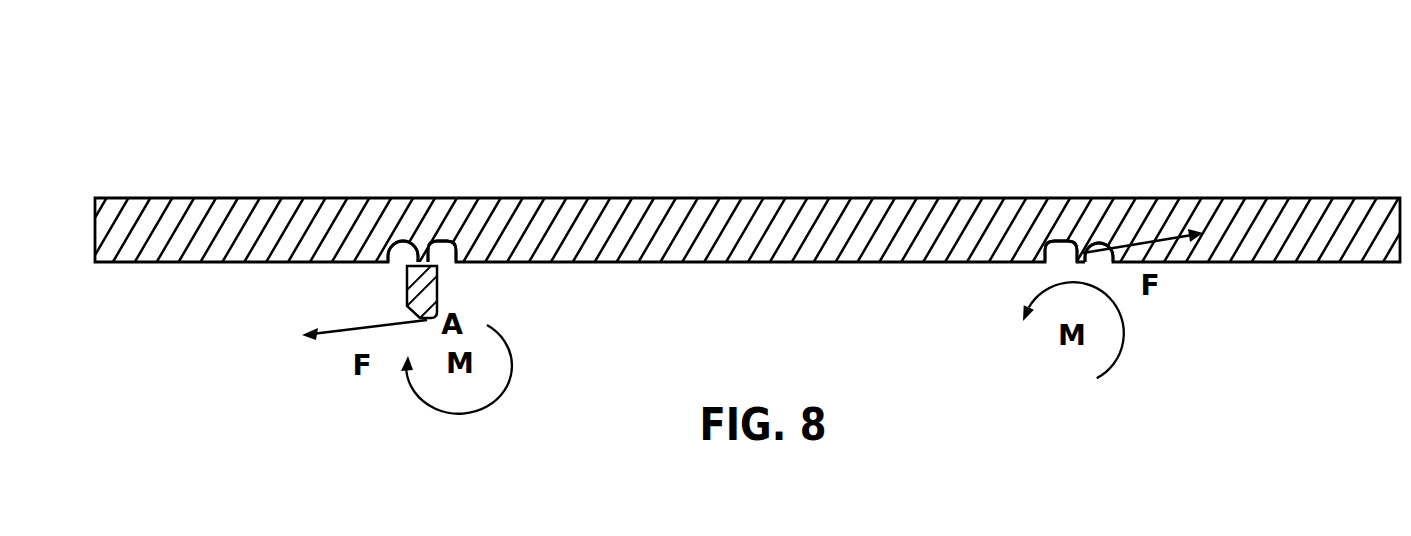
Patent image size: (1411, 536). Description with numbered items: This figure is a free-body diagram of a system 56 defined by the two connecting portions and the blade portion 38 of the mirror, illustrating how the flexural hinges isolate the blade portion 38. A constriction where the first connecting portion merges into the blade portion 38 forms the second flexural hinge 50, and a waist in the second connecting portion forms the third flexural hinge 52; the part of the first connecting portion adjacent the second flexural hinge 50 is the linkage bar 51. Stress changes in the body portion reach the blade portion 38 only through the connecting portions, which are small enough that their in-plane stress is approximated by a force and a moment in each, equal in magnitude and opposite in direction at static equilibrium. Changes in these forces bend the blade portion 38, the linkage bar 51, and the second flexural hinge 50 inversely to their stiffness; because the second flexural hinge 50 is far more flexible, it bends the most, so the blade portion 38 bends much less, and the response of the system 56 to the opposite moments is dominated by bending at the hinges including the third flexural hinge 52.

The blade portion 38 is at (818, 232).
The second flexural hinge 50 is at (430, 255).
The linkage bar 51 is at (407, 289).
The third flexural hinge 52 is at (1080, 257).
The system 56 is at (701, 101).